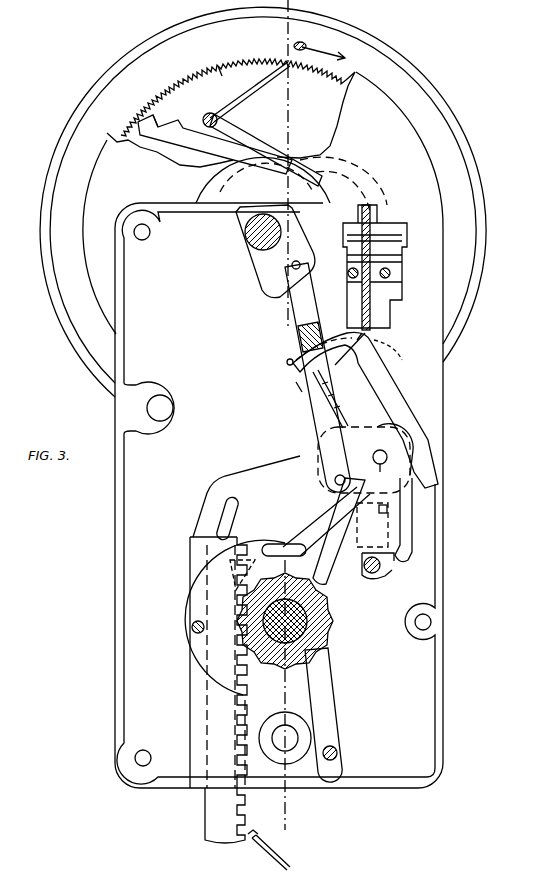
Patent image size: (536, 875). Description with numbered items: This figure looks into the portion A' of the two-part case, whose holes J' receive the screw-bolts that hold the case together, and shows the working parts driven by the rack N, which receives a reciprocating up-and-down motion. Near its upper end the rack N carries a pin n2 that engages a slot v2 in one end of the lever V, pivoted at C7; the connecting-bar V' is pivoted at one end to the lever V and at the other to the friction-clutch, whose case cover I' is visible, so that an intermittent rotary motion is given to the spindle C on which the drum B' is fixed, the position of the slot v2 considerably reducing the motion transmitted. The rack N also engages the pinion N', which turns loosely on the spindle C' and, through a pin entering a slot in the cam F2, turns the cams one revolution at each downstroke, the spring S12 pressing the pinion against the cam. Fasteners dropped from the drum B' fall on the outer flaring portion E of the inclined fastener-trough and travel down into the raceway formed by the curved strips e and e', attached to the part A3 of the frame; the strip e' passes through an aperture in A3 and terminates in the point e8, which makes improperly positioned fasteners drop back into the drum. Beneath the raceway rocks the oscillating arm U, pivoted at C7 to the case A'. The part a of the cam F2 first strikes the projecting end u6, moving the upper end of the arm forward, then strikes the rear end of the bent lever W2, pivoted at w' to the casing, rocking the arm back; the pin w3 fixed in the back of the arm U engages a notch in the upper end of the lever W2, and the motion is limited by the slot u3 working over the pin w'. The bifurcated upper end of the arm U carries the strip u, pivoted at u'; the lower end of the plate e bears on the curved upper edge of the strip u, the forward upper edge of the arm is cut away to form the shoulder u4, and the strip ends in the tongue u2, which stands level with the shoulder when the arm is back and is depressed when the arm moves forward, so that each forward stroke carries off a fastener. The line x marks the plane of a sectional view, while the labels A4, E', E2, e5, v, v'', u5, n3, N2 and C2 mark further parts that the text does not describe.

The drum B' is at (233, 82).
The frame part A3 is at (378, 151).
The case portion A' is at (279, 495).
The bolt holes J' is at (266, 500).
The semicircular wall A4 is at (263, 180).
The point of strip e' e8 is at (343, 184).
The pawl bar E2 is at (215, 144).
The outer flaring portion of fastener-trough E is at (164, 109).
The pawl lever E' is at (266, 150).
The pawl rod e5 is at (253, 466).
The spindle C is at (244, 232).
The clutch case cover I' is at (275, 251).
The pivot of lever V' v is at (309, 264).
The connecting-bar V' is at (317, 377).
The pivot pin v'' is at (340, 471).
The curved raceway strip (plate) e is at (375, 267).
The curved raceway strip e' is at (387, 284).
The oscillating arm U is at (362, 458).
The strip u is at (329, 351).
The pivot of strip u u' is at (322, 351).
The shoulder u4 is at (376, 346).
The tongue u2 is at (359, 379).
The pivot C7 is at (364, 460).
The lever extension u5 is at (402, 529).
The slot u3 is at (390, 525).
The pin w3 is at (387, 510).
The pivot pin of lever W2 w' is at (382, 578).
The bent lever W2 is at (316, 545).
The projecting end of arm U u6 is at (332, 583).
The lever V is at (242, 575).
The slot v2 is at (236, 520).
The pin n2 is at (202, 557).
The rack N is at (218, 690).
The guide screw n3 is at (192, 624).
The spindle C' is at (298, 621).
The cam F2 is at (322, 650).
The pinion N' is at (264, 683).
The cam part a is at (300, 683).
The spring S12 is at (333, 702).
The rack body N2 is at (223, 725).
The pivot stud C2 is at (285, 738).
The section line x is at (281, 841).